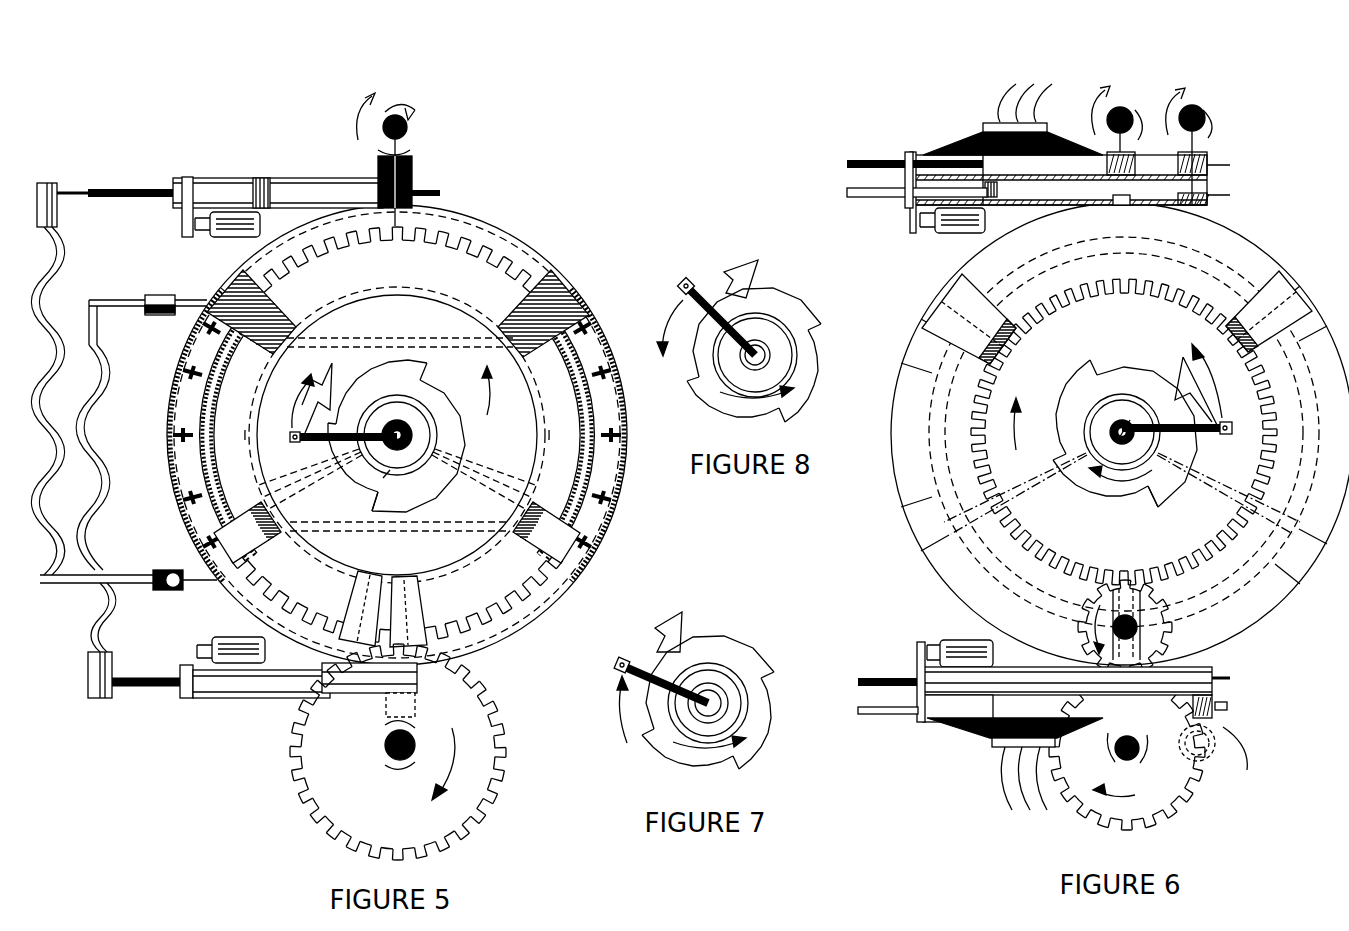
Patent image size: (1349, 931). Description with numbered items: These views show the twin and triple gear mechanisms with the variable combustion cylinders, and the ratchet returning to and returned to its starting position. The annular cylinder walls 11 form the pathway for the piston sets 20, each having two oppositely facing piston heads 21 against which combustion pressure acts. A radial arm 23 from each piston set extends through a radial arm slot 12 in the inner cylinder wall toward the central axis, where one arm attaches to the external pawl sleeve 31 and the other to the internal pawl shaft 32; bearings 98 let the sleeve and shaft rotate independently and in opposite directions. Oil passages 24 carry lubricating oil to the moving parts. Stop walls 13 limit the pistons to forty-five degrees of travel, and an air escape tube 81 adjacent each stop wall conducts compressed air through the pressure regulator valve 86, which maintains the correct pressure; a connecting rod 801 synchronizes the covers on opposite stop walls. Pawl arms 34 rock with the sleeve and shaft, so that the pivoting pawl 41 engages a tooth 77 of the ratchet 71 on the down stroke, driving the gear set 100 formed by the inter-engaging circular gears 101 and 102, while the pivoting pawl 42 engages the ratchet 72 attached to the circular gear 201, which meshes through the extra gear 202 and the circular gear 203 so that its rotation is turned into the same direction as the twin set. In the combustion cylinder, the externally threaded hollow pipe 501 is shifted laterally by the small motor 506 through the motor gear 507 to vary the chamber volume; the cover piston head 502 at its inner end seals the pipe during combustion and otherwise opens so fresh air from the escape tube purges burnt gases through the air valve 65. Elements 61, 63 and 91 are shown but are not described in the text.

In FIG. 5, the cylinder walls 11 is at (493, 229).
In FIG. 5, the radial arm slots 12 is at (256, 445).
In FIG. 5, the stop walls 13 is at (590, 322).
In FIG. 6, the stop walls 13 is at (1317, 318).
In FIG. 6, the piston sets 20 is at (936, 516).
In FIG. 5, the piston heads 21 is at (268, 305).
In FIG. 6, the piston heads 21 is at (1275, 292).
In FIG. 5, the radial arm 23 is at (316, 462).
In FIG. 6, the radial arm 23 is at (1020, 502).
In FIG. 5, the oil passages 24 is at (584, 437).
In FIG. 5, the external pawl sleeve 31 is at (401, 428).
In FIG. 6, the external pawl sleeve 31 is at (1112, 420).
In FIG. 5, the internal pawl shaft 32 is at (410, 432).
In FIG. 6, the internal pawl shaft 32 is at (1133, 412).
In FIG. 6, the pawl arms 34 is at (1197, 448).
In FIG. 5, the pivoting pawl 41 is at (343, 398).
In FIG. 8, the pivoting pawl 41 is at (758, 267).
In FIG. 7, the pivoting pawl 41 is at (668, 615).
In FIG. 6, the pivoting pawl 42 is at (1211, 384).
In FIG. 6, the roller 61 is at (1138, 158).
In FIG. 6, the roller 63 is at (1208, 152).
In FIG. 5, the air valve 65 is at (412, 165).
In FIG. 5, the ratchet 71 is at (430, 493).
In FIG. 8, the ratchet 71 is at (818, 382).
In FIG. 7, the ratchet 71 is at (720, 640).
In FIG. 6, the ratchet 72 is at (1128, 510).
In FIG. 5, the teeth 77 is at (367, 498).
In FIG. 6, the teeth 77 is at (1163, 512).
In FIG. 5, the air escape tube 81 is at (432, 338).
In FIG. 5, the pressure regulator valve 86 is at (60, 206).
In FIG. 5, the roller 91 is at (410, 125).
In FIG. 5, the bearings 98 is at (383, 478).
In FIG. 5, the gear set 100 is at (368, 284).
In FIG. 5, the circular gear 101 is at (505, 635).
In FIG. 5, the circular gear 102 is at (505, 760).
In FIG. 6, the circular gear 201 is at (1078, 337).
In FIG. 6, the extra gear 202 is at (1178, 628).
In FIG. 6, the circular gear 203 is at (1225, 750).
In FIG. 6, the externally threaded hollow pipe 501 is at (990, 203).
In FIG. 6, the cover piston head 502 is at (1043, 190).
In FIG. 5, the small motor 506 is at (215, 237).
In FIG. 6, the small motor 506 is at (955, 237).
In FIG. 6, the motor gear 507 is at (905, 222).
In FIG. 5, the connecting rod 801 is at (186, 461).